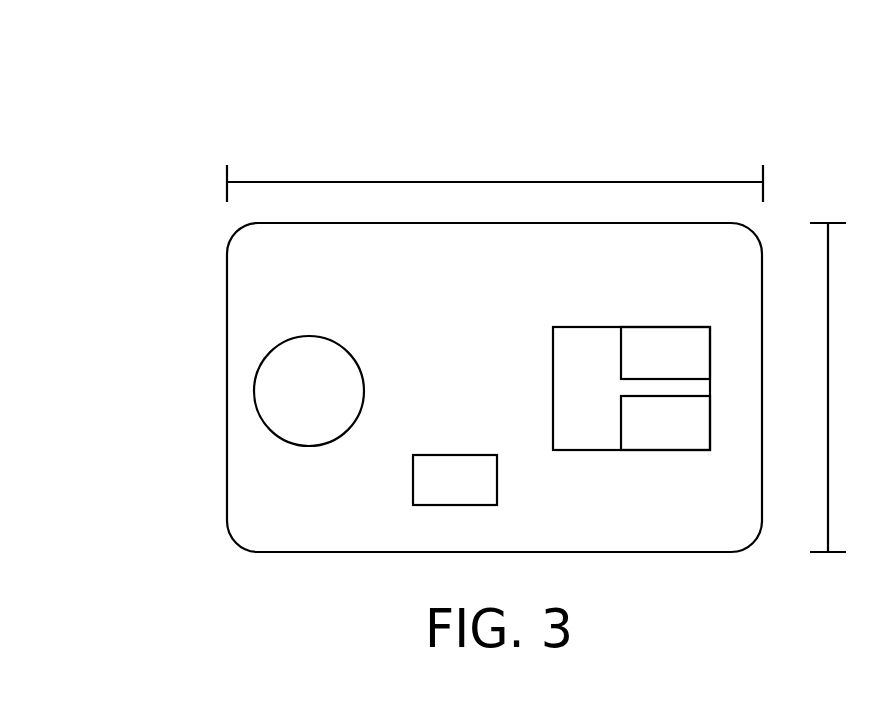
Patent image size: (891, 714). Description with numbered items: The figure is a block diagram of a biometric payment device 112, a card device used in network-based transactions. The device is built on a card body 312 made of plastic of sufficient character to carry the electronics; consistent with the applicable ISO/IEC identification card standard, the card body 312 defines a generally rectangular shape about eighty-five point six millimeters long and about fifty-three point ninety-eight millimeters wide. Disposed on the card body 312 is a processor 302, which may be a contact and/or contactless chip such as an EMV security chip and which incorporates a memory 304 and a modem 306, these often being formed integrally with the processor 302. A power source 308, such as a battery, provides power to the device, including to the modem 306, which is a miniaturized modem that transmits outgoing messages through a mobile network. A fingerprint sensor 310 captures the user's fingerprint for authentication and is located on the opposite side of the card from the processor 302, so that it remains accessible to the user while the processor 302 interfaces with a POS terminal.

The biometric payment device 112 is at (215, 130).
The processor 302 is at (553, 388).
The memory 304 is at (643, 327).
The modem 306 is at (687, 450).
The power source 308 is at (413, 468).
The fingerprint sensor 310 is at (364, 400).
The card body 312 is at (217, 543).